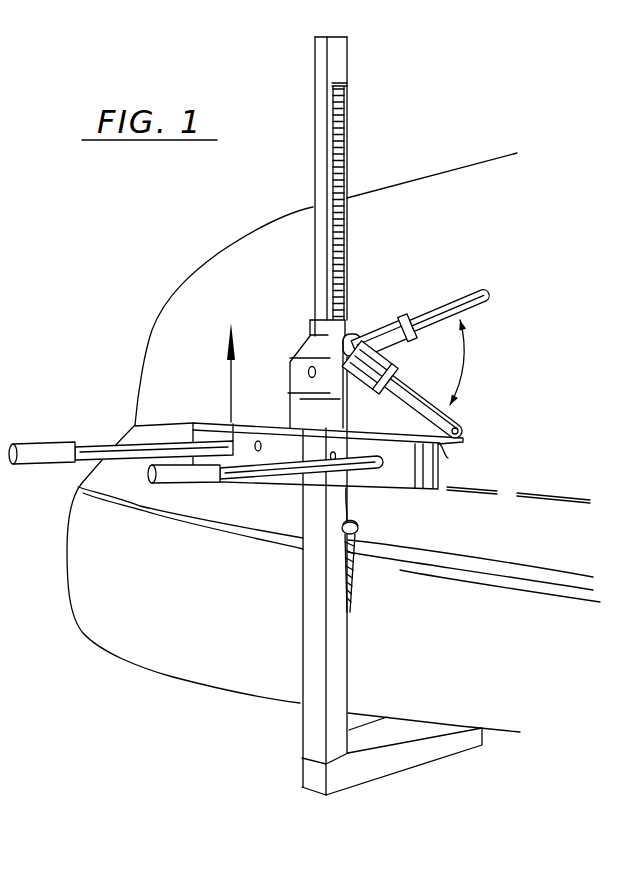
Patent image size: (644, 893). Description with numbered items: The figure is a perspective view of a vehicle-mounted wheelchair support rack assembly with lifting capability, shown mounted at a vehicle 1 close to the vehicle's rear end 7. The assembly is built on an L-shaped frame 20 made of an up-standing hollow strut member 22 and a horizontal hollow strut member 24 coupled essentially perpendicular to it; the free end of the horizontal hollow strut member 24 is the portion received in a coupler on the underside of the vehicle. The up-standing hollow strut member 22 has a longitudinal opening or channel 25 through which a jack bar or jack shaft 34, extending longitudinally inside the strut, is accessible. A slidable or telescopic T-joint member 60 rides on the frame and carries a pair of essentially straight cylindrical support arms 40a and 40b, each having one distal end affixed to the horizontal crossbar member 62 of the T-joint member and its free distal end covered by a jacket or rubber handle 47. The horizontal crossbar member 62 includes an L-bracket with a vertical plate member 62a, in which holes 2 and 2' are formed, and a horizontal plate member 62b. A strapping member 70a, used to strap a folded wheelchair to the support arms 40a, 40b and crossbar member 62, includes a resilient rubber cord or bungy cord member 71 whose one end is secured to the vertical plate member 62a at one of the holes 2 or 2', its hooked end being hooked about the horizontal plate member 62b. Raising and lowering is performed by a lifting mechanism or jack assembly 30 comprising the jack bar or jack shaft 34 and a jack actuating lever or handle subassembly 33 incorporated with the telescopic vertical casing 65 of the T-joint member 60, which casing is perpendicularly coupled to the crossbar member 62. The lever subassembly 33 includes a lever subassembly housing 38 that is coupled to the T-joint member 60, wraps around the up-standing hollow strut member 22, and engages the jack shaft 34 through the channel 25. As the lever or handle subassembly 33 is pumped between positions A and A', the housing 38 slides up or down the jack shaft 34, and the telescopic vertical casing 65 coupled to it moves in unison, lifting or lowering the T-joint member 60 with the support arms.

The vehicle 1 is at (460, 166).
The hole 2 is at (262, 416).
The hole 2' is at (366, 458).
The rear end of the vehicle 7 is at (202, 258).
The L-shaped frame 20 is at (371, 63).
The up-standing hollow strut member 22 is at (315, 46).
The horizontal hollow strut member 24 is at (410, 744).
The longitudinal opening or channel 25 is at (346, 86).
The lifting mechanism or jack assembly 30 is at (365, 316).
The jack actuating lever or handle subassembly 33 is at (449, 307).
The jack bar or jack shaft 34 is at (343, 184).
The lever subassembly housing 38 is at (302, 360).
The support arm 40a is at (121, 458).
The support arm 40b is at (280, 471).
The jacket or rubber handle 47 is at (46, 461).
The slidable or telescopic T-joint member 60 is at (292, 501).
The horizontal crossbar member 62 is at (455, 464).
The vertical plate member 62a is at (410, 480).
The horizontal plate member 62b is at (462, 440).
The telescopic vertical casing 65 is at (300, 747).
The strapping member 70a is at (352, 588).
The resilient rubber cord or bungy cord member 71 is at (347, 587).
The position A is at (495, 340).
The position A' is at (476, 465).